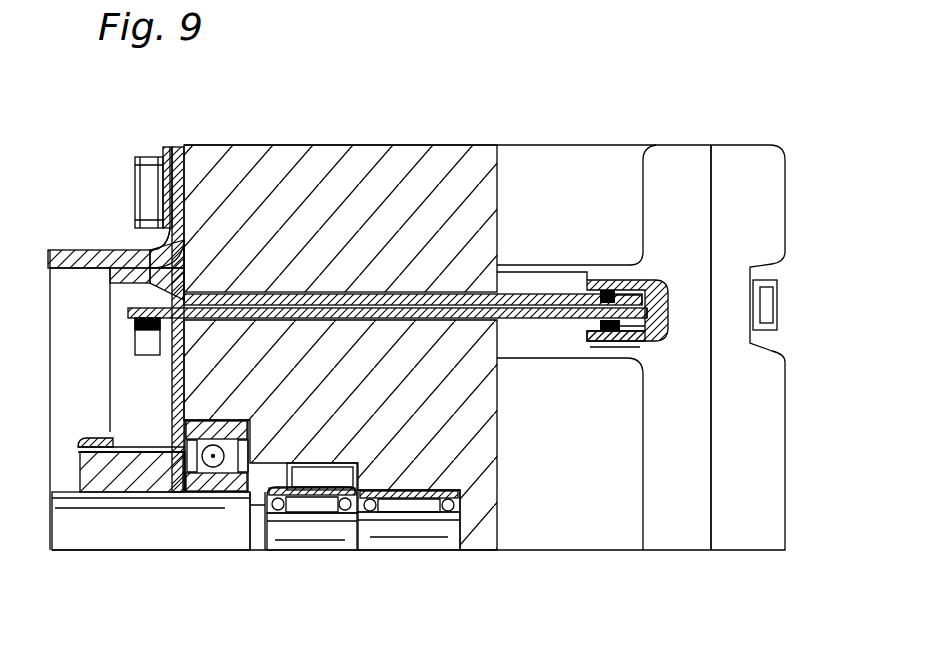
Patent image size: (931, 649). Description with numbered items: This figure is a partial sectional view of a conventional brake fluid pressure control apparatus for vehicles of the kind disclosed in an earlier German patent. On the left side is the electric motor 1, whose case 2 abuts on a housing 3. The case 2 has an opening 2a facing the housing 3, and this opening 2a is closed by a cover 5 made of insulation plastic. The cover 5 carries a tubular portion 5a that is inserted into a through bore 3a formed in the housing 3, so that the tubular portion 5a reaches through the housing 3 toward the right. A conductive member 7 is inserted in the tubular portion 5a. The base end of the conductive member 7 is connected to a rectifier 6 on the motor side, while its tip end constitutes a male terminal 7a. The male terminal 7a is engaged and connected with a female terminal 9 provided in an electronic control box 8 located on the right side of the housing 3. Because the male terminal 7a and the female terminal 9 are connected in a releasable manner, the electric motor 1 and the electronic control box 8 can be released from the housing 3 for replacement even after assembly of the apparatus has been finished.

The electric motor 1 is at (65, 250).
The case 2 is at (110, 250).
The opening 2a is at (192, 272).
The housing 3 is at (473, 535).
The through bore 3a is at (494, 322).
The cover 5 is at (172, 400).
The tubular portion 5a is at (305, 296).
The rectifier 6 is at (135, 345).
The conductive member 7 is at (542, 296).
The male terminal 7a is at (613, 343).
The electronic control box 8 is at (750, 552).
The female terminal 9 is at (630, 288).